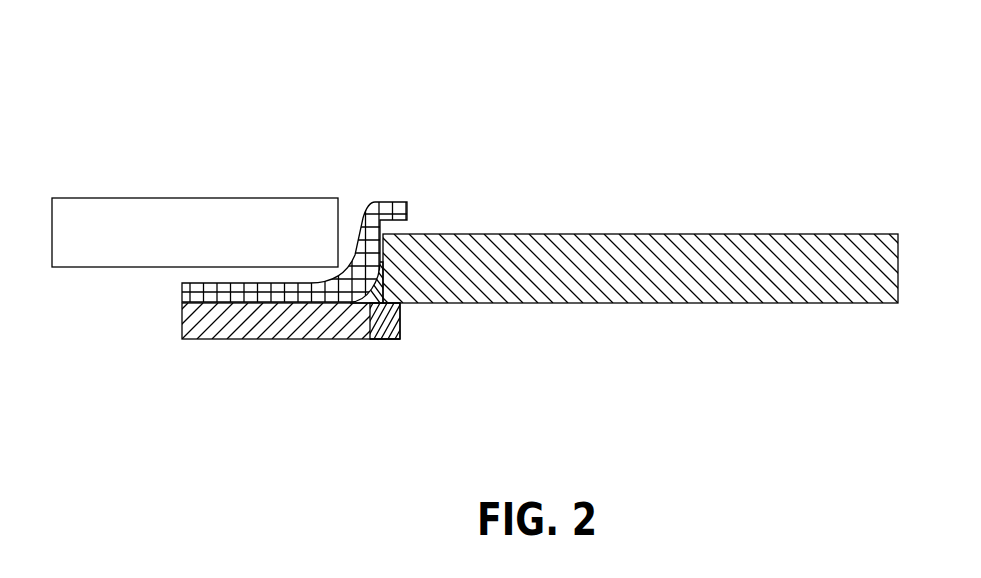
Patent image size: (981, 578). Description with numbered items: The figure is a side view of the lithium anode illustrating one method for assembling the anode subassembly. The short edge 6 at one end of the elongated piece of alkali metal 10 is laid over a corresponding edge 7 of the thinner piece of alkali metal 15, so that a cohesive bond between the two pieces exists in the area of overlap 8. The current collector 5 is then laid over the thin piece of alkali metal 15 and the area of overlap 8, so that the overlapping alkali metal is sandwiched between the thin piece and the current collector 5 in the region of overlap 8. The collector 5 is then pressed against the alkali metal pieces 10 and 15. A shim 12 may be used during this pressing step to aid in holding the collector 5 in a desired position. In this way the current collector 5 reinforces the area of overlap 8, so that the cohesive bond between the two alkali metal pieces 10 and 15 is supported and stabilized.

The current collector 5 is at (399, 201).
The short edge 6 is at (381, 277).
The corresponding edge 7 is at (402, 321).
The area of overlap 8 is at (380, 345).
The elongated piece of alkali metal 10 is at (652, 245).
The shim 12 is at (238, 217).
The thinner piece of alkali metal 15 is at (232, 339).